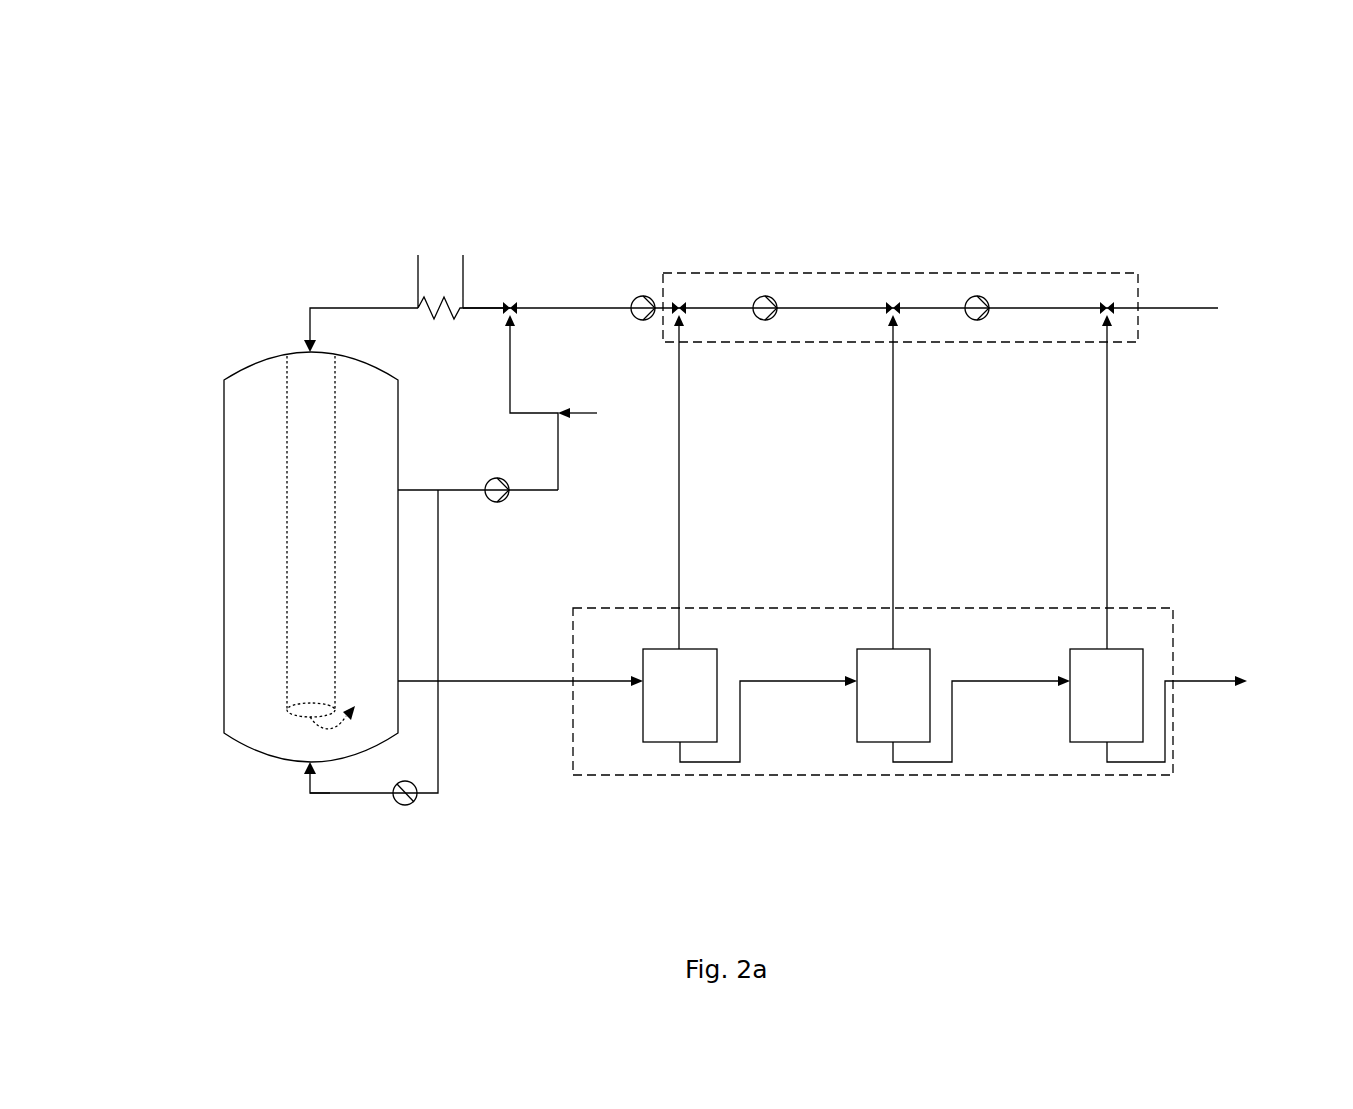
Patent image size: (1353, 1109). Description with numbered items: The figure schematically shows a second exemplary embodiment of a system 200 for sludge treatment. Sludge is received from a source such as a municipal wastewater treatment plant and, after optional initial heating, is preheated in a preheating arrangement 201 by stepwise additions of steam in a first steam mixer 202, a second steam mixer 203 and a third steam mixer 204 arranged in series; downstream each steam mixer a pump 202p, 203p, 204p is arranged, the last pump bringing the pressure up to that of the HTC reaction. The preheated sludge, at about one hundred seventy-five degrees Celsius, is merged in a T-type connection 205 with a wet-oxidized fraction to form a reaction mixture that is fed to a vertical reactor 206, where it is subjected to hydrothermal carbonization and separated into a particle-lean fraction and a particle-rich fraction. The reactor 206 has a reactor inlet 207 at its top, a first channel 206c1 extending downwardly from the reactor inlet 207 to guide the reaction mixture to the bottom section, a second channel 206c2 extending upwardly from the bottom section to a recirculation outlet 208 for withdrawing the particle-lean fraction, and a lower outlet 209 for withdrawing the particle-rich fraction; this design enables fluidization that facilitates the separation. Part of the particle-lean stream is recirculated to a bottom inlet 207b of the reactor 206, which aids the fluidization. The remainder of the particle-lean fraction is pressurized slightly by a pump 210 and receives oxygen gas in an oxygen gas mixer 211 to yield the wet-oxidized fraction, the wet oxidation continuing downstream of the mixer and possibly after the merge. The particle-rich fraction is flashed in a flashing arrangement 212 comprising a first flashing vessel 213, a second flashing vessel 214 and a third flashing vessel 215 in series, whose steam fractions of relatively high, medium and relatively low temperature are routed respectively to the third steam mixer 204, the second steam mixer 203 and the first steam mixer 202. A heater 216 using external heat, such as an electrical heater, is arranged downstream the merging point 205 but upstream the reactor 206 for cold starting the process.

The system 200 is at (256, 210).
The preheating arrangement 201 is at (1140, 290).
The first steam mixer 202 is at (1107, 297).
The pump 202p is at (977, 295).
The second steam mixer 203 is at (893, 297).
The pump 203p is at (765, 295).
The third steam mixer 204 is at (679, 297).
The pump 204p is at (643, 295).
The T-type connection 205 is at (510, 295).
The vertical reactor 206 is at (224, 597).
The first channel 206c1 is at (305, 493).
The second channel 206c2 is at (378, 555).
The reactor inlet 207 is at (307, 348).
The bottom inlet 207b is at (310, 768).
The recirculation outlet 208 is at (398, 490).
The lower outlet 209 is at (398, 681).
The pump 210 is at (505, 503).
The oxygen gas mixer 211 is at (565, 418).
The flashing arrangement 212 is at (1175, 733).
The first flashing vessel 213 is at (657, 742).
The second flashing vessel 214 is at (875, 742).
The third flashing vessel 215 is at (1097, 742).
The heater 216 is at (418, 272).